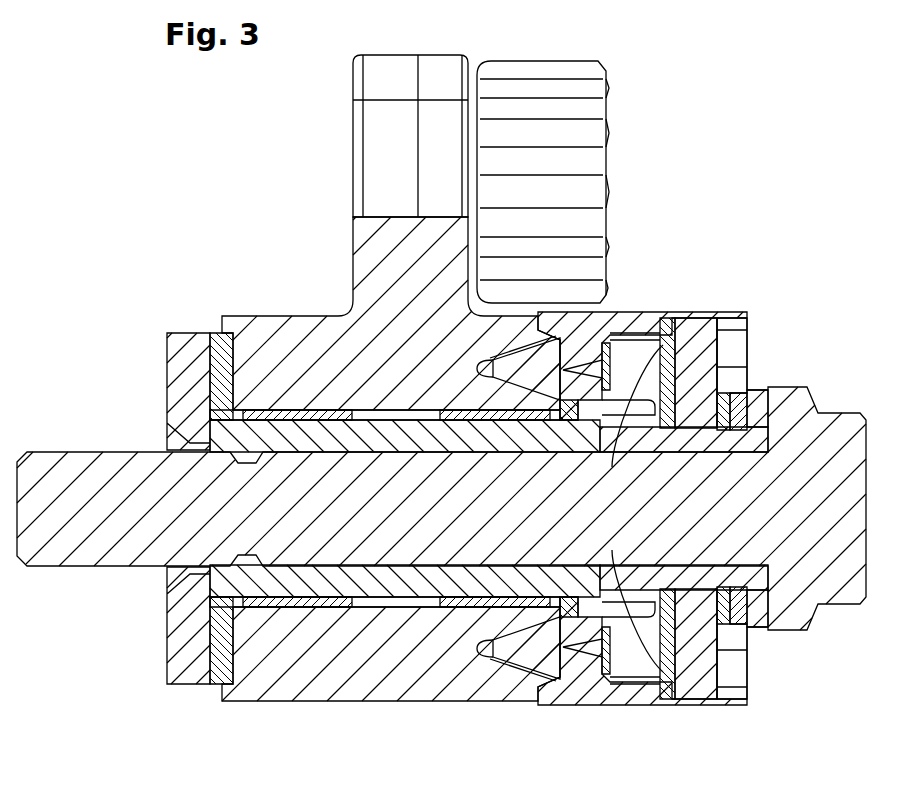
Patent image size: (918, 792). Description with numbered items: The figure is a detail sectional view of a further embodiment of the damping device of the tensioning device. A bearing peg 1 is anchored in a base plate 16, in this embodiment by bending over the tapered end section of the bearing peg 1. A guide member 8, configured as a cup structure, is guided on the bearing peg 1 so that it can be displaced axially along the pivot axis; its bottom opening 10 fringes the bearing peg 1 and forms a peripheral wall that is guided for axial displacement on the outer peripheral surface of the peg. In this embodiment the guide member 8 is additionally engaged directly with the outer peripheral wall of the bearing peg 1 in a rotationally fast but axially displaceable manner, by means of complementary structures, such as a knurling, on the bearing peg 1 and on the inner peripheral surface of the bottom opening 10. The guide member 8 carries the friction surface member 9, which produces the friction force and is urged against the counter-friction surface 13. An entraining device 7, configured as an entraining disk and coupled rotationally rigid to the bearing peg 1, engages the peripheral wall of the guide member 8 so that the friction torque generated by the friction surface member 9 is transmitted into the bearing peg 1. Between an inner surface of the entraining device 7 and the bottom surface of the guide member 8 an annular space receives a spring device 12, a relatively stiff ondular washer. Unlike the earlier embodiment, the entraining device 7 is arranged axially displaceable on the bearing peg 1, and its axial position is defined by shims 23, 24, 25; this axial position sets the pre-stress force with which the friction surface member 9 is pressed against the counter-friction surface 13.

The bearing peg 1 is at (697, 440).
The entraining device 7 is at (700, 357).
The guide member 8 is at (634, 323).
The friction surface member 9 is at (535, 645).
The bottom opening 10 is at (615, 395).
The spring device 12 is at (612, 467).
The counter-friction surface 13 is at (500, 655).
The base plate 16 is at (186, 652).
The shim 23 is at (760, 603).
The shim 24 is at (738, 607).
The shim 25 is at (710, 613).